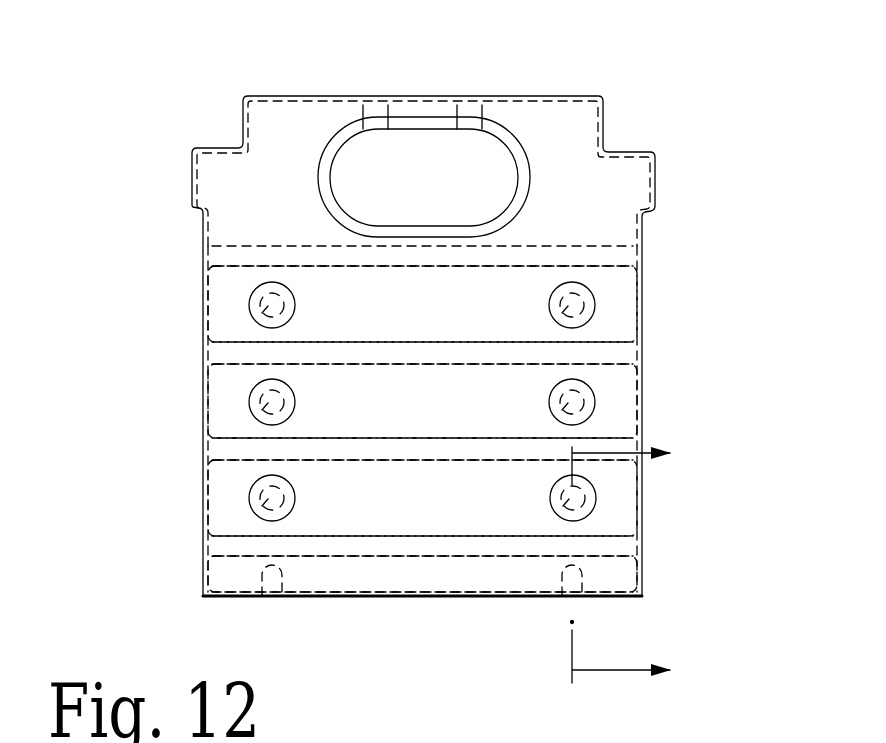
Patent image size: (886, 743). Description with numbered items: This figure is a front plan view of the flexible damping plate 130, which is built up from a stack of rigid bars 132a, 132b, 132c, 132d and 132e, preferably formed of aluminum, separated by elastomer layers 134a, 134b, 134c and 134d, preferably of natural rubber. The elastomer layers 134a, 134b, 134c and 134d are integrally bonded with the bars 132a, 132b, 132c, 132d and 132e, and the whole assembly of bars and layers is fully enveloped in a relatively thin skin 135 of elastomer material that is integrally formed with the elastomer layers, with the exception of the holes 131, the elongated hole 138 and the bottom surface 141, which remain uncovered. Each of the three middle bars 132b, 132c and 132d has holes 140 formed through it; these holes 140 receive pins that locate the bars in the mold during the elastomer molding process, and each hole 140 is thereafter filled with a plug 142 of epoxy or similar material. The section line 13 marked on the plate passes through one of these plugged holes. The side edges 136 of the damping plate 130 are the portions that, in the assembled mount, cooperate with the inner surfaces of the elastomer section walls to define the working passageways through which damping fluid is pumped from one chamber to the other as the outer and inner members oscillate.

The flexible damping plate 130 is at (617, 143).
The holes 131 is at (265, 597).
The rigid bar 132a is at (655, 185).
The rigid bar 132b is at (642, 290).
The rigid bar 132c is at (643, 403).
The rigid bar 132d is at (643, 490).
The rigid bar 132e is at (197, 565).
The elastomer layer 134a is at (220, 255).
The elastomer layer 134b is at (218, 350).
The elastomer layer 134c is at (220, 447).
The elastomer layer 134d is at (222, 543).
The skin 135 is at (248, 165).
The side edge 136 is at (202, 290).
The elongated hole 138 is at (492, 152).
The holes 140 is at (255, 310).
The bottom surface 141 is at (385, 598).
The plug 142 is at (250, 298).
The section line 13- 13 is at (646, 565).